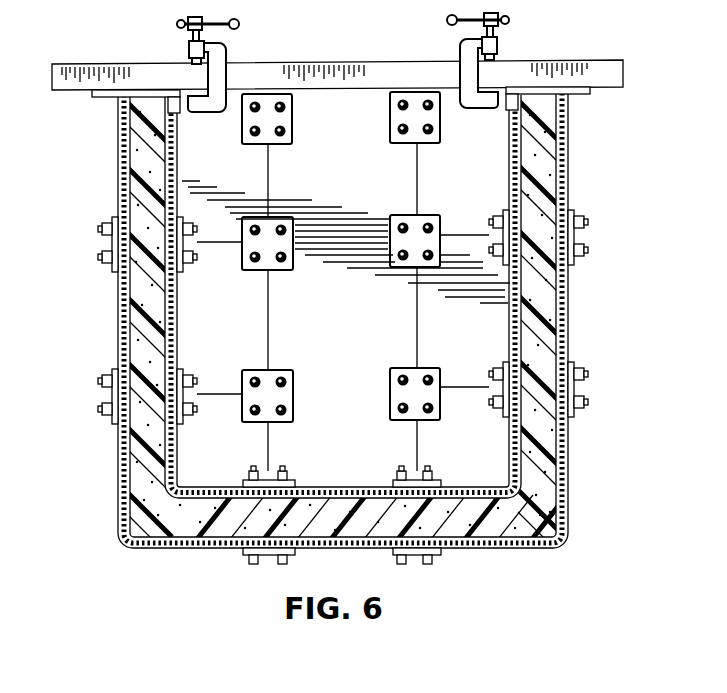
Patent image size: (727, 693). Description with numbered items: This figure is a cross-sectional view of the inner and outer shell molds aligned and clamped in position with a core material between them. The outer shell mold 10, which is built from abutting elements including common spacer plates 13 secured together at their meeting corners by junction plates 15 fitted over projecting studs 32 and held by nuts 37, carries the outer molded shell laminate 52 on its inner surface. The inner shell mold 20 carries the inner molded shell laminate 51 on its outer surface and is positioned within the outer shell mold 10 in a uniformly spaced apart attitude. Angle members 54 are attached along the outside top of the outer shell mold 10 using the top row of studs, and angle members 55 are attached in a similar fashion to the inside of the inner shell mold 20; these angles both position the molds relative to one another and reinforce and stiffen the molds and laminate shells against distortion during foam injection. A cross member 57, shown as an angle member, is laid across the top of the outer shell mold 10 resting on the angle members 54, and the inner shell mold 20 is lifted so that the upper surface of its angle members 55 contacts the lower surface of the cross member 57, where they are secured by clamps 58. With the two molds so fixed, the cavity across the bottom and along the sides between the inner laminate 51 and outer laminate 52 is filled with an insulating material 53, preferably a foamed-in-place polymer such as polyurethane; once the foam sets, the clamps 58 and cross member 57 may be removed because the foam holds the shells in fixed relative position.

The outer shell mold 10 is at (582, 470).
The common spacer plates 13 is at (358, 107).
The junction plate 15 is at (290, 380).
The inner shell mold 20 is at (512, 323).
The projecting studs 32 is at (110, 252).
The nut 37 is at (108, 268).
The inner molded shell laminate 51 is at (523, 298).
The outer molded shell laminate 52 is at (560, 446).
The insulating material 53 is at (540, 512).
The angle members 54 is at (112, 108).
The angle members 55 is at (176, 113).
The cross member 57 is at (600, 61).
The clamps 58 is at (188, 48).